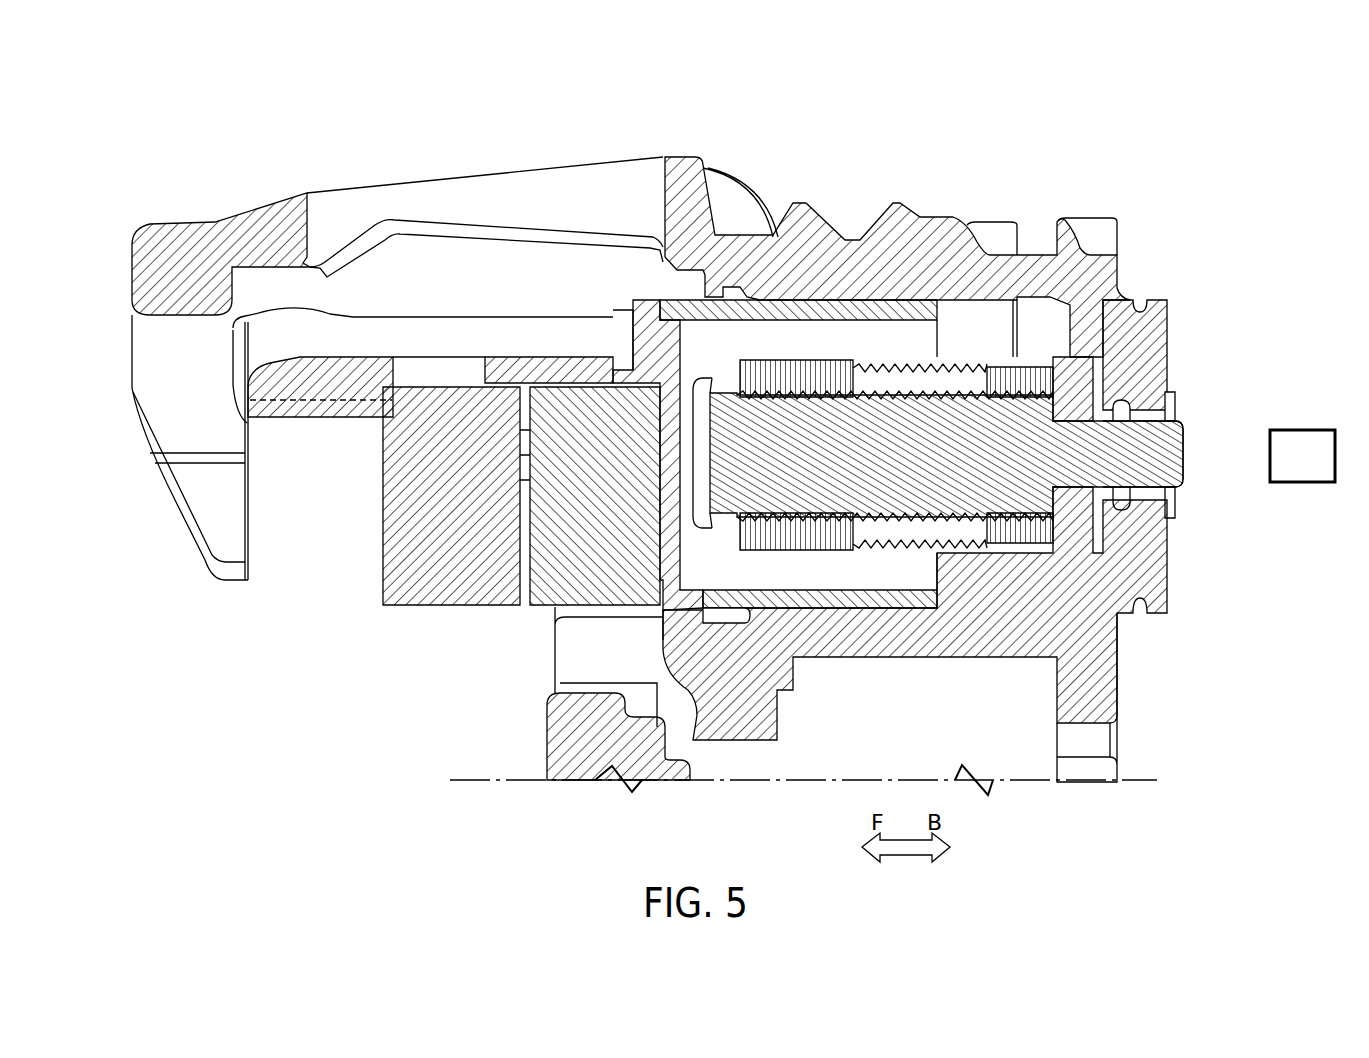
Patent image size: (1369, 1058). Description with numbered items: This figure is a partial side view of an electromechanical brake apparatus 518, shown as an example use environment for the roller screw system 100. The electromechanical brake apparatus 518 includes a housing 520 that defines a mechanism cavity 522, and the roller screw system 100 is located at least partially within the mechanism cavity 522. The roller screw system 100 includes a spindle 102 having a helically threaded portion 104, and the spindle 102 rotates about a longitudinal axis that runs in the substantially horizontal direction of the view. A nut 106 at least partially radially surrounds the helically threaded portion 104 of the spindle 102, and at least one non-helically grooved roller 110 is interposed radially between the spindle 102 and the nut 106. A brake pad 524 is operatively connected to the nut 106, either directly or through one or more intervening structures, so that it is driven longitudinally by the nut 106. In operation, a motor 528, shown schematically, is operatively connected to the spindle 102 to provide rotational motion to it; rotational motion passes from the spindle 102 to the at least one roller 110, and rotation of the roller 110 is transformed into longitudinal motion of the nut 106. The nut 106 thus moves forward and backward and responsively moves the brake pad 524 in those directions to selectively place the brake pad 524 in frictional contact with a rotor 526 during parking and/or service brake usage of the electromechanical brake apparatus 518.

The roller screw system 100 is at (1132, 360).
The spindle 102 is at (1160, 470).
The helically threaded portion 104 is at (925, 468).
The nut 106 is at (975, 548).
The non-helically grooved roller 110 is at (882, 380).
The electromechanical brake apparatus 518 is at (516, 122).
The housing 520 is at (904, 226).
The mechanism cavity 522 is at (853, 560).
The brake pad 524 is at (556, 600).
The rotor 526 is at (393, 577).
The motor 528 is at (1183, 455).